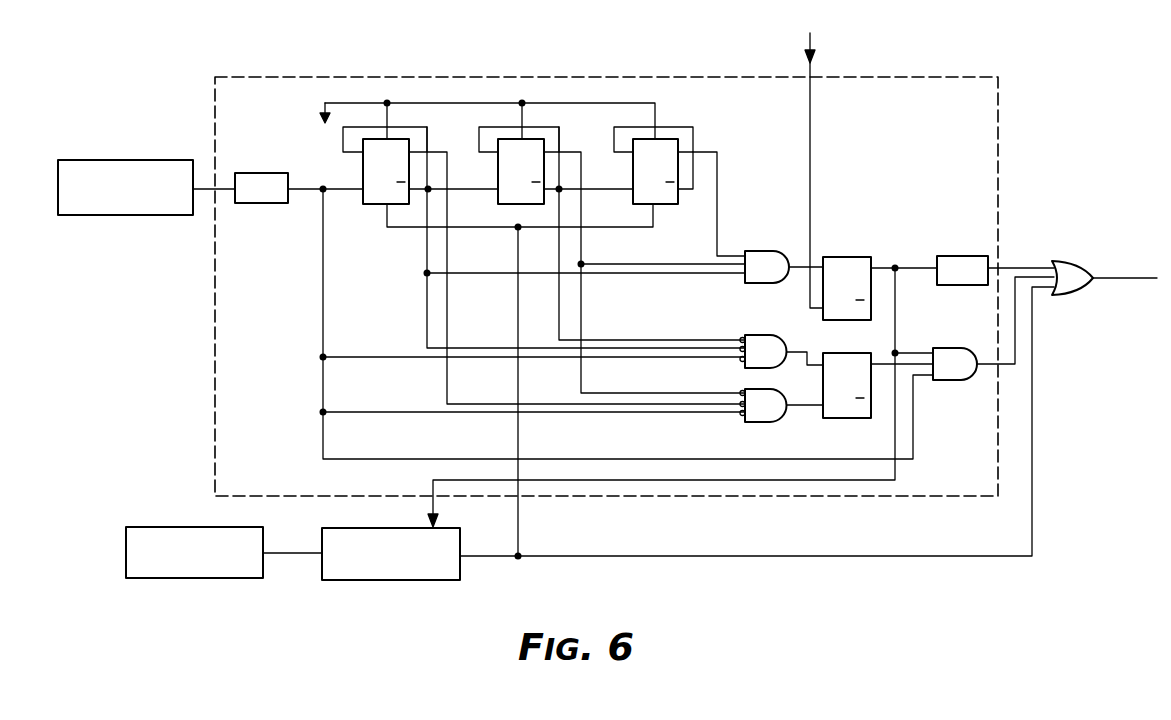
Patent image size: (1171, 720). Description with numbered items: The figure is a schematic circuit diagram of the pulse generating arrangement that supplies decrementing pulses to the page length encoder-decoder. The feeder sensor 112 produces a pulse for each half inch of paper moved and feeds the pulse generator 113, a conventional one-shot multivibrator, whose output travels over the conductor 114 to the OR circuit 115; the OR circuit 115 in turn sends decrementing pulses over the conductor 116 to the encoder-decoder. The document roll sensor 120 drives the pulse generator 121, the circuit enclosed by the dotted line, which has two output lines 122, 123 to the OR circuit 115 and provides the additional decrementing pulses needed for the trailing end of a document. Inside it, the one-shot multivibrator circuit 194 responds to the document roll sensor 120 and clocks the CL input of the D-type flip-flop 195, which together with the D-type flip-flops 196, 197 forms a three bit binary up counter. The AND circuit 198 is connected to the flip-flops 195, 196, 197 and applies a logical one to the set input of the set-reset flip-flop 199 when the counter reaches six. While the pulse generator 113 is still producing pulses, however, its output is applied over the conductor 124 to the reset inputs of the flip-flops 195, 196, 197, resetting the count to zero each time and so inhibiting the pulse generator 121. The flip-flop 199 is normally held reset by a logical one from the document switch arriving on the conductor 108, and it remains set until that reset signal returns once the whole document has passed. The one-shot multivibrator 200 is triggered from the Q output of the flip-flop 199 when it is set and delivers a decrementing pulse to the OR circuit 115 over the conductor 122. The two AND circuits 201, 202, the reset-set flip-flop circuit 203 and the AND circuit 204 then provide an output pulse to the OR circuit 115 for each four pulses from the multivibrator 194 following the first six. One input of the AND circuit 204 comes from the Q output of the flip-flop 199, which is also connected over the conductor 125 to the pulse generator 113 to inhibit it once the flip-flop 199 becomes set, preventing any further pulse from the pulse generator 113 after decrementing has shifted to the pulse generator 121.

The conductor 108 is at (812, 143).
The feeder sensor 112 is at (188, 578).
The pulse generator 113 is at (393, 580).
The conductor 114 is at (1034, 378).
The OR circuit 115 is at (1077, 292).
The conductor 116 is at (1136, 278).
The document roll sensor 120 is at (127, 160).
The pulse generator 121 is at (1003, 117).
The conductor 122 is at (1028, 266).
The output line 123 is at (990, 368).
The conductor 124 is at (518, 531).
The conductor 125 is at (629, 481).
The one-shot multivibrator circuit 194 is at (261, 173).
The D-type flip-flop 195 is at (365, 204).
The D-type flip-flop 196 is at (497, 204).
The D-type flip-flop 197 is at (668, 204).
The AND circuit 198 is at (768, 251).
The set-reset flip-flop 199 is at (863, 257).
The one-shot multivibrator 200 is at (963, 256).
The AND circuit 201 is at (763, 335).
The AND circuit 202 is at (760, 422).
The reset-set flip-flop circuit 203 is at (850, 420).
The AND circuit 204 is at (958, 348).